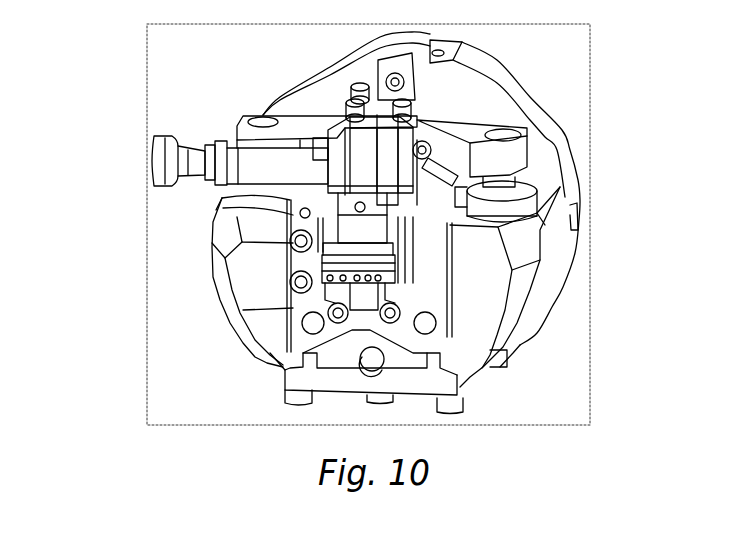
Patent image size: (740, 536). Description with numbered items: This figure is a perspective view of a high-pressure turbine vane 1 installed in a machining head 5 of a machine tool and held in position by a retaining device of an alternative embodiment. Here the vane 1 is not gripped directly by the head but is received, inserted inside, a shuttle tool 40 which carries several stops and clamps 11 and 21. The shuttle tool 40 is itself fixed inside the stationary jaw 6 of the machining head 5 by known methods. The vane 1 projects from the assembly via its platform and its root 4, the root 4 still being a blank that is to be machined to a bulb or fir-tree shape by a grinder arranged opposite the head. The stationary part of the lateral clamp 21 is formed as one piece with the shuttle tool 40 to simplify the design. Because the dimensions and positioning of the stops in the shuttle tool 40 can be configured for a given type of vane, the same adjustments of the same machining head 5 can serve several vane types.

The machining head 5 is at (125, 60).
The clamp 11 is at (353, 232).
The vane root 4 is at (290, 311).
The lateral clamp 21 is at (430, 190).
The HP turbine vane 1 is at (393, 272).
The shuttle tool 40 is at (433, 297).
The stationary jaw 6 is at (467, 350).